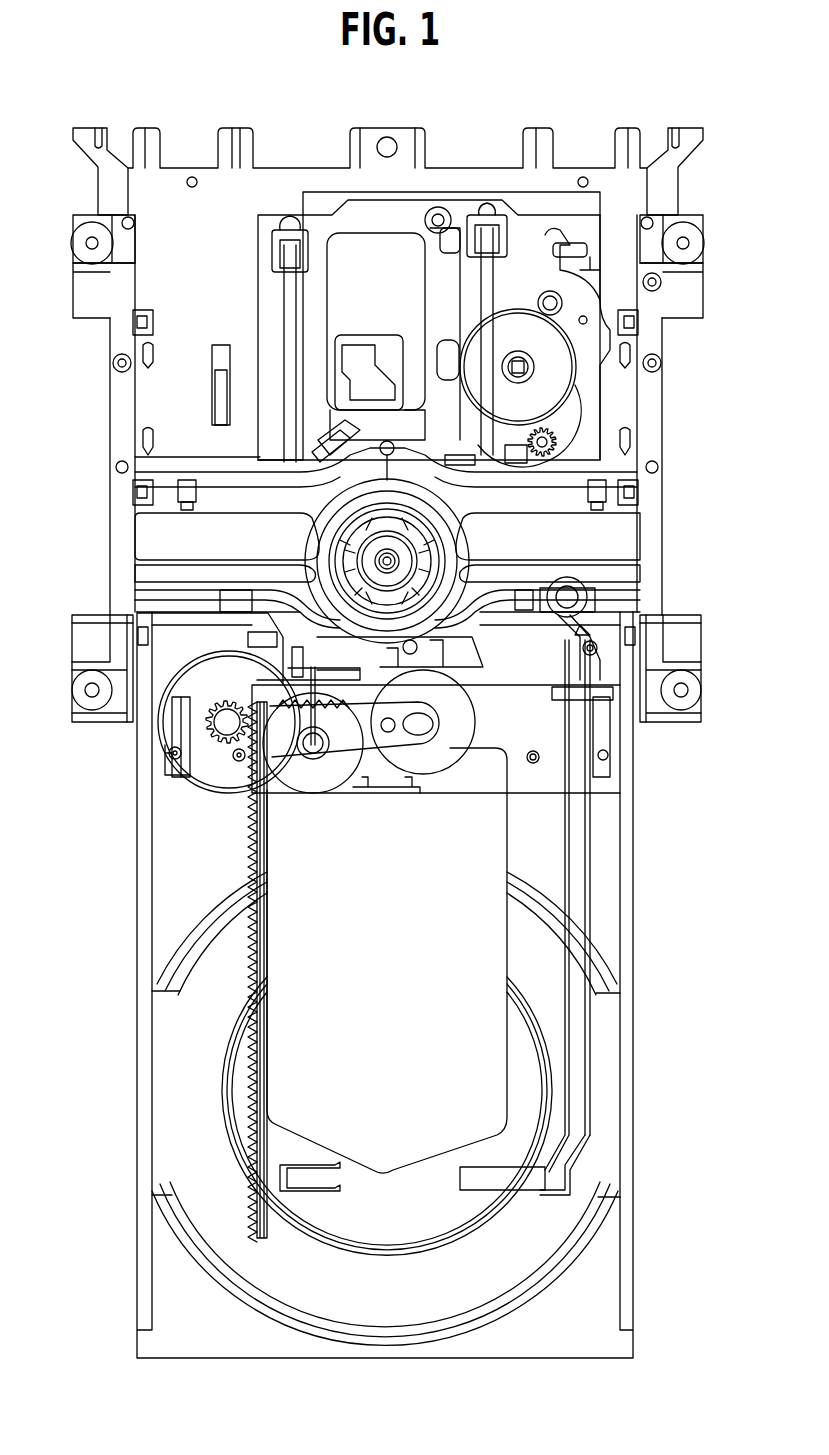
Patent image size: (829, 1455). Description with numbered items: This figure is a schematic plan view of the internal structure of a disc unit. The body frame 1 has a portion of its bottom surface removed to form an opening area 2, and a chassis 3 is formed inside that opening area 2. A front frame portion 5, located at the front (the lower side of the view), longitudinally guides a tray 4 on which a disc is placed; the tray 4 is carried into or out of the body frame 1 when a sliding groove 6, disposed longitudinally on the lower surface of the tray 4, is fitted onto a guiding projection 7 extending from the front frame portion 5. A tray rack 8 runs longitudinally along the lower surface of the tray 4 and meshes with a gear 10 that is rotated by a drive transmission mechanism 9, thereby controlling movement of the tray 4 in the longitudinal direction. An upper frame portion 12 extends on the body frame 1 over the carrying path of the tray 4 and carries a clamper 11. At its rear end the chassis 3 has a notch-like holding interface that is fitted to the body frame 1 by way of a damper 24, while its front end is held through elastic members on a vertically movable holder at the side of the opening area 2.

The body frame 1 is at (268, 175).
The opening area 2 is at (510, 200).
The chassis 3 is at (587, 233).
The tray 4 is at (608, 913).
The front frame portion 5 is at (482, 776).
The sliding groove 6 is at (590, 1090).
The guiding projection 7 is at (597, 645).
The tray rack 8 is at (260, 1078).
The drive transmission mechanism 9 is at (323, 777).
The gear 10 is at (215, 745).
The clamper 11 is at (443, 547).
The upper frame portion 12 is at (167, 537).
The damper 24 is at (438, 210).